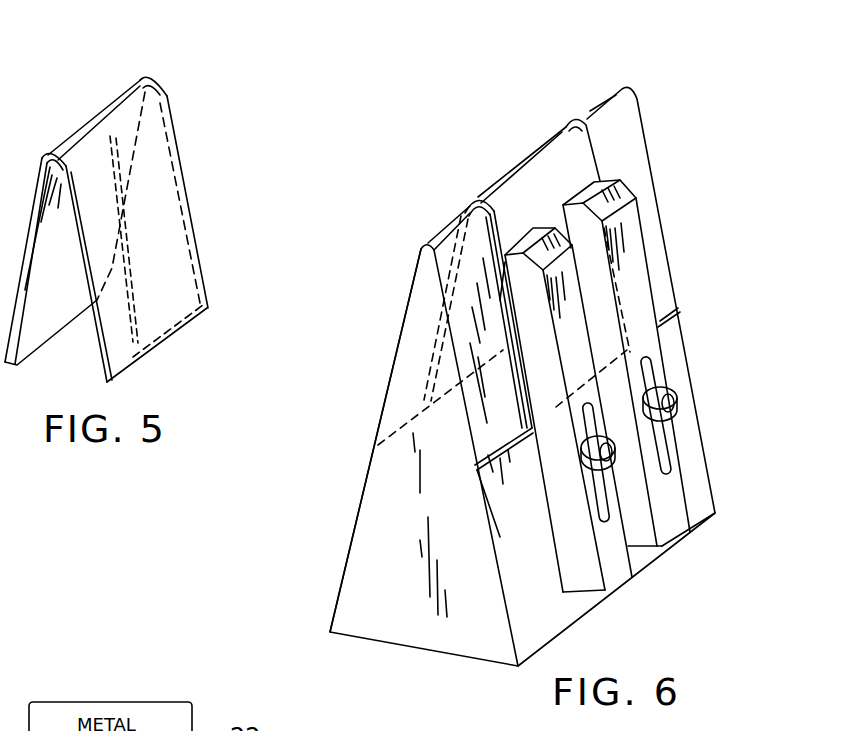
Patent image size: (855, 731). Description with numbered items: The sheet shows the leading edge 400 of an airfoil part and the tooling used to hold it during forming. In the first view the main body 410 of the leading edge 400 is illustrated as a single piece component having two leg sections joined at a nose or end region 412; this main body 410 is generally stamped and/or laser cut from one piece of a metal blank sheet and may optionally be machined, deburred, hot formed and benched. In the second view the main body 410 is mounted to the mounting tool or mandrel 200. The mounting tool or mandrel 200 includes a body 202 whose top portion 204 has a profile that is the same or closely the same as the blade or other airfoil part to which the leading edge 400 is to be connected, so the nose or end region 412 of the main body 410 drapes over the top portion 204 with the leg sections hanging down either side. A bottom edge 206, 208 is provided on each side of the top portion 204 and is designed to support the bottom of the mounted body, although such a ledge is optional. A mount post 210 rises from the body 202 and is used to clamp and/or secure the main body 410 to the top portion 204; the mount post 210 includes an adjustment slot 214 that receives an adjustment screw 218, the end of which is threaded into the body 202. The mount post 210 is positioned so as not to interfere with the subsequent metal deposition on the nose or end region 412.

In FIG. 6, the mounting tool or mandrel 200 is at (531, 376).
In FIG. 6, the body 202 is at (367, 528).
In FIG. 6, the top portion 204 is at (407, 360).
In FIG. 6, the bottom edge 206 is at (474, 466).
In FIG. 6, the bottom edge 208 is at (378, 445).
In FIG. 6, the mount post 210 is at (580, 297).
In FIG. 6, the adjustment slot 214 is at (606, 512).
In FIG. 6, the adjustment screw 218 is at (605, 437).
In FIG. 5, the leading edge 400 is at (155, 204).
In FIG. 5, the main body 410 is at (165, 201).
In FIG. 6, the main body 410 is at (583, 163).
In FIG. 5, the nose or end region 412 is at (112, 103).
In FIG. 6, the nose or end region 412 is at (559, 130).